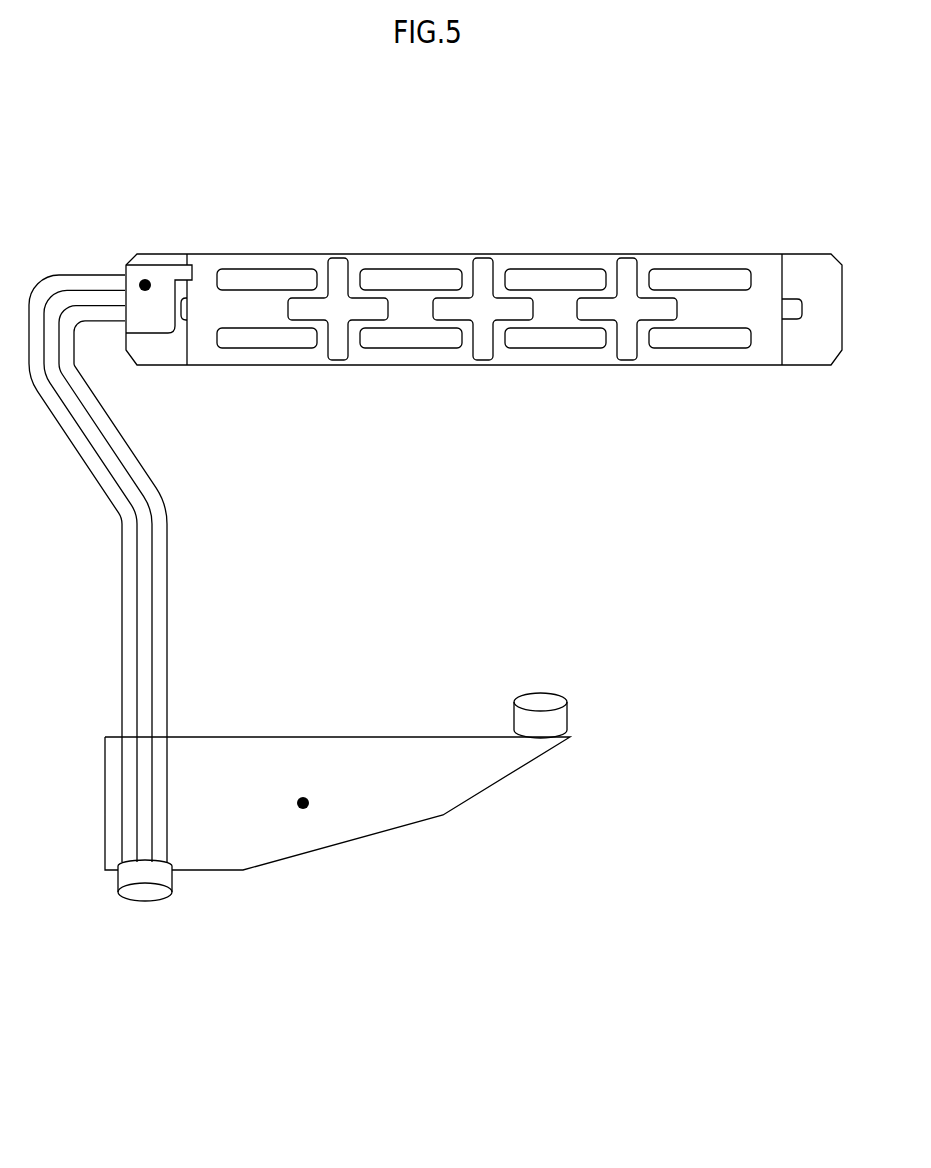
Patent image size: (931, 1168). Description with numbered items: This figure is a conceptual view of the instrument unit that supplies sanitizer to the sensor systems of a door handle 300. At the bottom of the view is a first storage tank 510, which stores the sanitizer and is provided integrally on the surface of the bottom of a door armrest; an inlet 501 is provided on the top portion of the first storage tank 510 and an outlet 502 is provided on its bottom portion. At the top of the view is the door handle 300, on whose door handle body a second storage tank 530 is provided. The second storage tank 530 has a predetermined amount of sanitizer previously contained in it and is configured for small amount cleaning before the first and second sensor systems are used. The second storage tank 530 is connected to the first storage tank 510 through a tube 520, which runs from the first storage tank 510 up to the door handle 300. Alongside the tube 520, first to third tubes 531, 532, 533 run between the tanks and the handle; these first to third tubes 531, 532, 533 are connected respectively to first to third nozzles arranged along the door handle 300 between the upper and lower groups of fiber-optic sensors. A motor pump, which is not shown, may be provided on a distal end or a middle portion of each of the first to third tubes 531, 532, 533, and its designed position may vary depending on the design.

The door handle 300 is at (483, 243).
The second storage tank 530 is at (145, 280).
The tube 520 is at (143, 568).
The first tube 531 is at (123, 660).
The second tube 532 is at (138, 597).
The third tube 533 is at (152, 538).
The first storage tank 510 is at (305, 808).
The inlet 501 is at (540, 700).
The outlet 502 is at (153, 896).